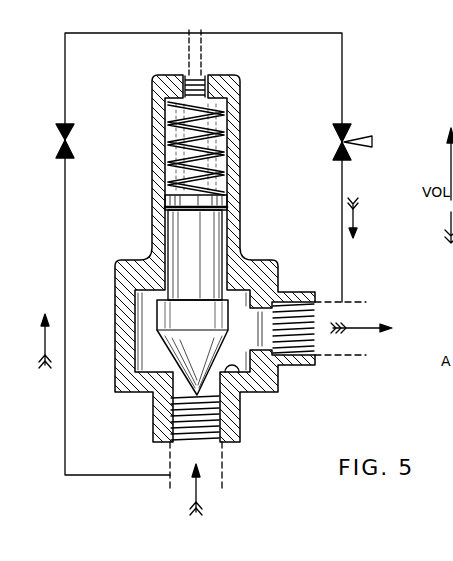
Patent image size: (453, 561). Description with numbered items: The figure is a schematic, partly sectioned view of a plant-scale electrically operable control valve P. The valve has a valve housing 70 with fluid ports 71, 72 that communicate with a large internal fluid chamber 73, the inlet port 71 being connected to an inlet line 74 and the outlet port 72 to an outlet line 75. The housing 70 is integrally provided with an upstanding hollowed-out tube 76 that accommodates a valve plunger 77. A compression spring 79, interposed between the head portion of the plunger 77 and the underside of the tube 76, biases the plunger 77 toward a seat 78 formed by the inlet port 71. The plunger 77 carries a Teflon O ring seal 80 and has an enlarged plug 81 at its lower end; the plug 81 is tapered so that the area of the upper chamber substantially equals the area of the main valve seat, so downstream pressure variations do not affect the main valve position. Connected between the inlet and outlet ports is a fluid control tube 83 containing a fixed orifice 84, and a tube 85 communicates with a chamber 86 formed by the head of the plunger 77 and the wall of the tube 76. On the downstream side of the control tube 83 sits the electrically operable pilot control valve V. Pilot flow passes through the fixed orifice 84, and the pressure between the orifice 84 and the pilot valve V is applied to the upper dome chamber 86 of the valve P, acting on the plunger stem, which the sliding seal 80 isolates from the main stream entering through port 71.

The valve housing 70 is at (122, 394).
The inlet fluid port 71 is at (216, 443).
The outlet fluid port 72 is at (317, 338).
The internal fluid chamber 73 is at (143, 355).
The inlet line 74 is at (226, 485).
The outlet line 75 is at (352, 302).
The upstanding hollowed-out tube 76 is at (238, 163).
The valve plunger 77 is at (186, 238).
The seat 78 is at (249, 387).
The compression spring 79 is at (232, 128).
The Teflon O ring seal 80 is at (233, 201).
The enlarged plug 81 is at (180, 322).
The fluid control tube 83 is at (64, 231).
The fixed orifice 84 is at (70, 141).
The tube 85 is at (207, 67).
The chamber 86 is at (165, 159).
The plant-scale electrically operable control valve P is at (252, 99).
The pilot control valve V is at (350, 138).